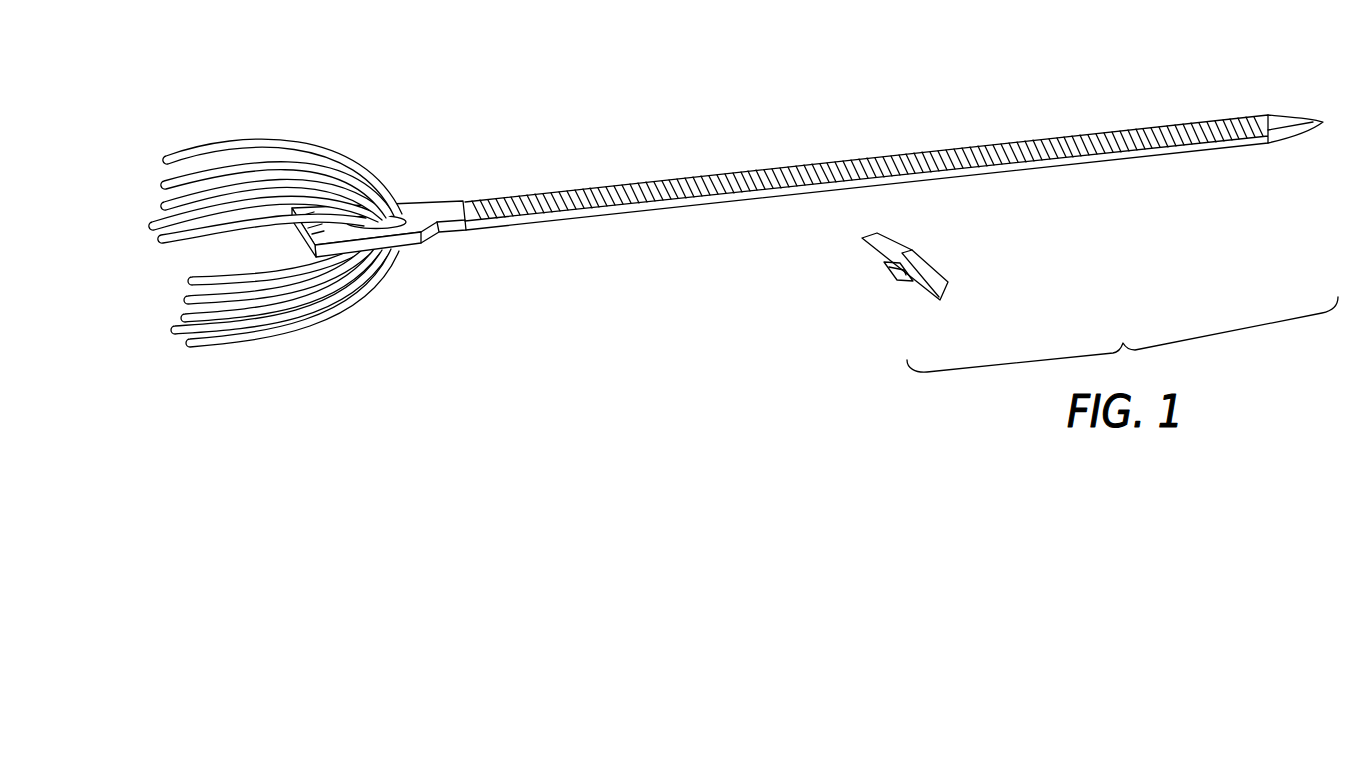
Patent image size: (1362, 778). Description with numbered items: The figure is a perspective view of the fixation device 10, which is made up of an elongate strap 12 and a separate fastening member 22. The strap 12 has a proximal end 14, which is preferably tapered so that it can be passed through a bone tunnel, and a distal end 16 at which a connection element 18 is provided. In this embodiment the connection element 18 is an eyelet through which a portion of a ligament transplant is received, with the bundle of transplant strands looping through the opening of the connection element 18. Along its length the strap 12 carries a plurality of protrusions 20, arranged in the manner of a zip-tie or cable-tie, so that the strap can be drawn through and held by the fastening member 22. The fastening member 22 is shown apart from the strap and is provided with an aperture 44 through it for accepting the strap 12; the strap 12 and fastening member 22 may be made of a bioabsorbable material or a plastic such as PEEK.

The fixation device 10 is at (700, 341).
The elongate strap 12 is at (818, 148).
The proximal end 14 is at (1330, 106).
The distal end 16 is at (411, 172).
The connection element 18 is at (386, 244).
The protrusions 20 is at (1017, 140).
The fastening member 22 is at (945, 282).
The aperture 44 is at (888, 275).